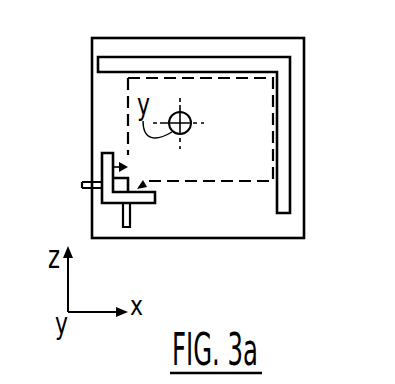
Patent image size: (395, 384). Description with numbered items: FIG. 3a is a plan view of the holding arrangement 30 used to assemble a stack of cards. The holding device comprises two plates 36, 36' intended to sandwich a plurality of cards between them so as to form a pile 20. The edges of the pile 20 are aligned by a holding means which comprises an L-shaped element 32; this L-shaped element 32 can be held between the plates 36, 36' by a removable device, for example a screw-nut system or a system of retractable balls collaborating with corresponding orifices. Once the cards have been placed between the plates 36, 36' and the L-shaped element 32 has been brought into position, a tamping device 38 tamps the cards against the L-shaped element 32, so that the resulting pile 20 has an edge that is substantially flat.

The substrate processing arrangement 30 is at (76, 75).
The L-shaped element 32 is at (292, 214).
The pile 20 is at (203, 183).
The plate 36 is at (126, 218).
The plate 36' is at (120, 185).
The tamping device 38 is at (113, 197).